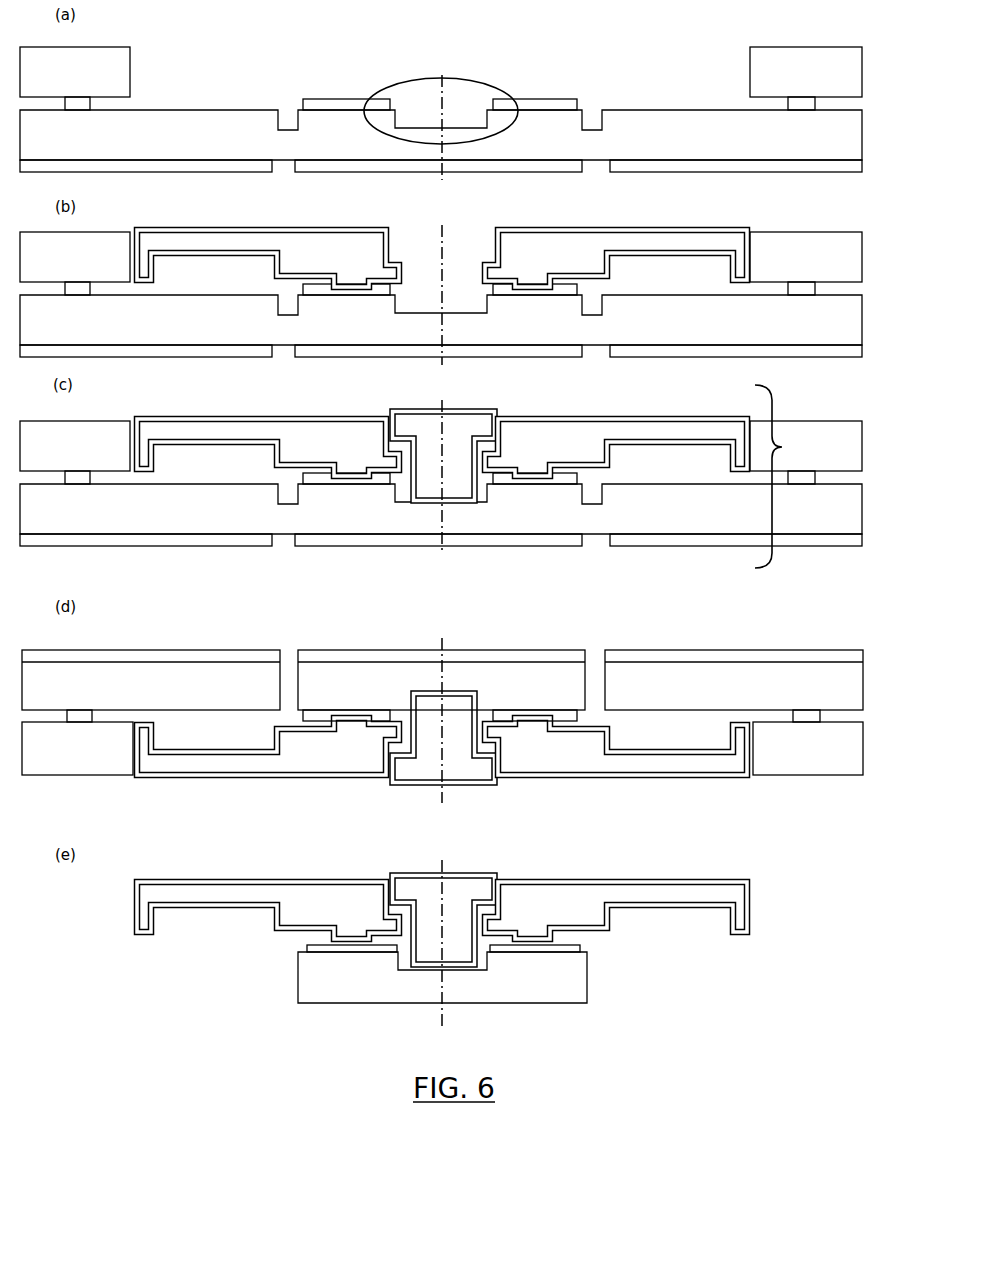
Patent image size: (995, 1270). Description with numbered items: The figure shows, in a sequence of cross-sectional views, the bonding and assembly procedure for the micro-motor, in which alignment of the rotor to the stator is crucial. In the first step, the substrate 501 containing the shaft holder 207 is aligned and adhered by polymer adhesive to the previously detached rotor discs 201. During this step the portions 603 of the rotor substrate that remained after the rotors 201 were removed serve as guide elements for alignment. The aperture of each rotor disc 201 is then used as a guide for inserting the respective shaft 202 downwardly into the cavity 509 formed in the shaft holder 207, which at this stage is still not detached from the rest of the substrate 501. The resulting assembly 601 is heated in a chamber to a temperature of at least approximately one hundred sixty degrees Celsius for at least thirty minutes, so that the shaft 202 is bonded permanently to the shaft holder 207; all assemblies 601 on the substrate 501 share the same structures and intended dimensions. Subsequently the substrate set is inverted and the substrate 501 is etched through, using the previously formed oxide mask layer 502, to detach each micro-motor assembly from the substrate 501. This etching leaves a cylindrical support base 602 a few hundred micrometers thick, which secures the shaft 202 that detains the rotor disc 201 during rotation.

The Si wafer substrate 501 is at (560, 122).
The oxide layer 502 is at (490, 650).
The cavity 509 is at (472, 80).
The portions of the substrate 603 is at (130, 68).
The rotor disc 201 is at (572, 252).
The shaft 202 is at (467, 430).
The assembly 601 is at (797, 476).
The support base 602 is at (347, 997).
The shaft holder 207 is at (565, 977).